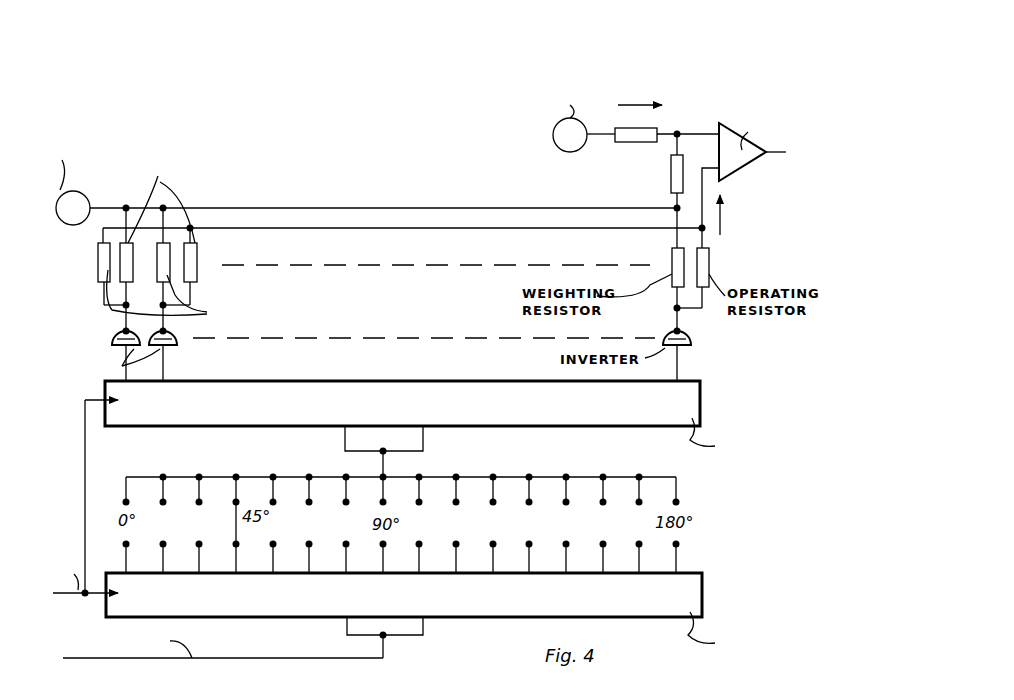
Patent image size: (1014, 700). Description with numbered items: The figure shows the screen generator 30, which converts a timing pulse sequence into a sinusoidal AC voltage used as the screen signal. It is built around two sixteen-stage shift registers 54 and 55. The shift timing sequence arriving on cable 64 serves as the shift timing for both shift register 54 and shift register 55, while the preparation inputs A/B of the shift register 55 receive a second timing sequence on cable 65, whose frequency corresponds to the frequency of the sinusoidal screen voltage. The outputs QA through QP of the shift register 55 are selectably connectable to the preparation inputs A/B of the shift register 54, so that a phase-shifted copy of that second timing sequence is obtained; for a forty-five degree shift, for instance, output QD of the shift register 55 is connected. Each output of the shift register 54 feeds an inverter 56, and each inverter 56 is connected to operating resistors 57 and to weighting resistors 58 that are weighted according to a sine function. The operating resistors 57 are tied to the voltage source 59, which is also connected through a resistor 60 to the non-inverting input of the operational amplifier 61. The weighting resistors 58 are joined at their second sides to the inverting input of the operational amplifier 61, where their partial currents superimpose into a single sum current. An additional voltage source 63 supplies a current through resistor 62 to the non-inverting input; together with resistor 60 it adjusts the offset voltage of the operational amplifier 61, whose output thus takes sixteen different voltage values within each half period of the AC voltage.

The screen generator 30 is at (752, 44).
The shift register 54 is at (700, 408).
The shift register 55 is at (702, 606).
The inverter 56 is at (112, 341).
The operating resistors 57 is at (131, 268).
The weighting resistors 58 is at (100, 270).
The voltage source 59 is at (90, 190).
The resistor 60 is at (671, 183).
The operational amplifier 61 is at (740, 163).
The resistor 62 is at (648, 141).
The voltage source 63 is at (553, 140).
The cable 64 is at (66, 598).
The cable 65 is at (340, 660).